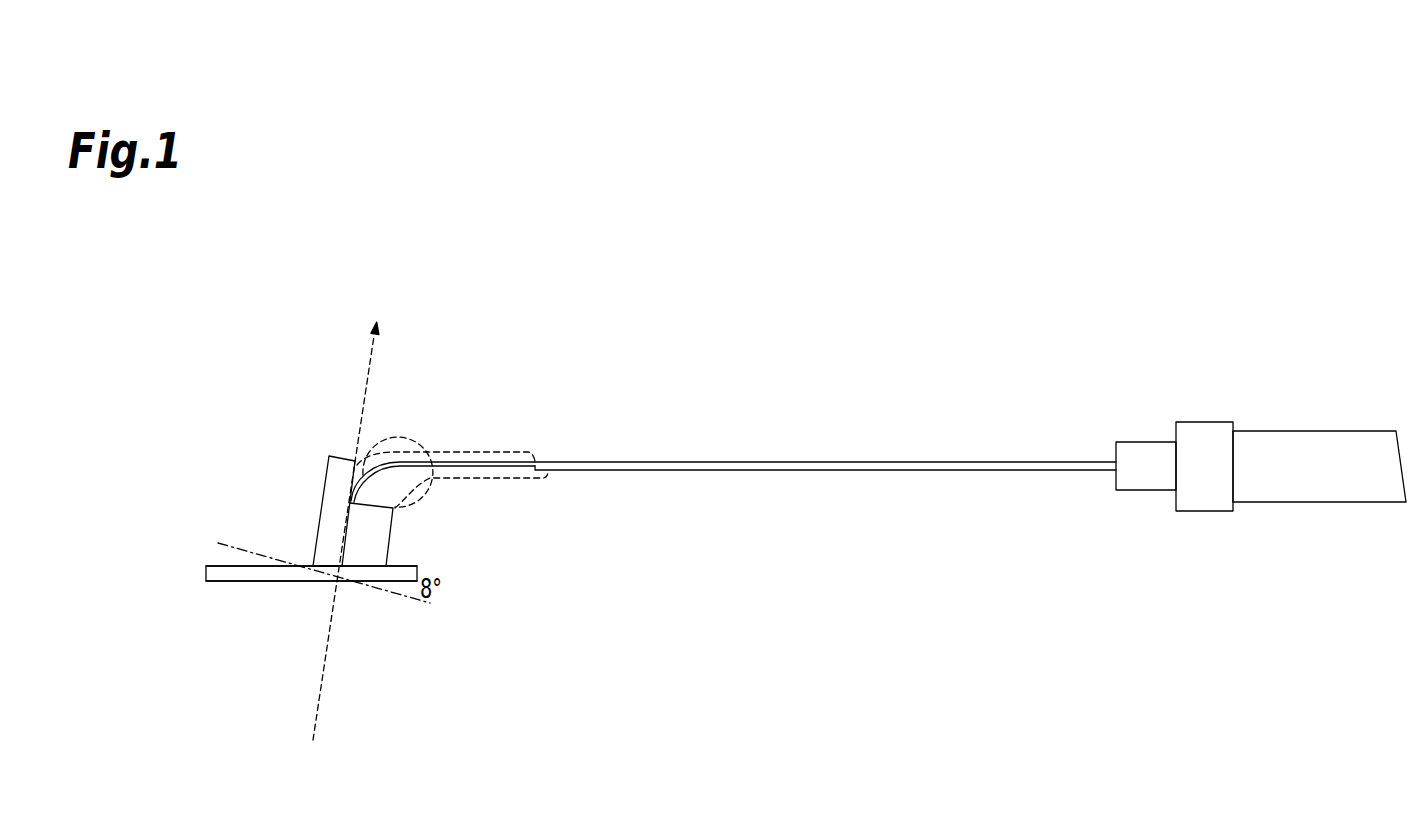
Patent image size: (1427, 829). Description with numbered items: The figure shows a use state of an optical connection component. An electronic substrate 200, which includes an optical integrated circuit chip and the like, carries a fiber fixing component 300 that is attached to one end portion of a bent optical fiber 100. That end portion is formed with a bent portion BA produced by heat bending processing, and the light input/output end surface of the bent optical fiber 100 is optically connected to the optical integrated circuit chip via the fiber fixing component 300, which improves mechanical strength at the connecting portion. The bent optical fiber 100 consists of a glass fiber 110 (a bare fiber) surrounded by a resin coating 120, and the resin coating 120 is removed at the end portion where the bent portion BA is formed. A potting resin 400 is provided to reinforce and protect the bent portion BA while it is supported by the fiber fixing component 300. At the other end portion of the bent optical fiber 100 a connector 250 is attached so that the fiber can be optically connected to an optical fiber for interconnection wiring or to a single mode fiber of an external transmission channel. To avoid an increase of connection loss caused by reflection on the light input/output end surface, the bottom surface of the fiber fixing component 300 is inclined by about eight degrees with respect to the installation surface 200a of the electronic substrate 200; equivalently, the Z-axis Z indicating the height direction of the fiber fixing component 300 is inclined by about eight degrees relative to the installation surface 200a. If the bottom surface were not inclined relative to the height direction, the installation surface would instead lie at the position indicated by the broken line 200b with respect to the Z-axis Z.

The bent optical fiber 100 is at (733, 443).
The glass fiber 110 is at (490, 468).
The resin coating 120 is at (533, 458).
The electronic substrate 200 is at (253, 582).
The installation surface 200a is at (216, 565).
The broken line 200b is at (402, 581).
The connector 250 is at (1304, 431).
The fiber fixing component 300 is at (425, 541).
The potting resin 400 is at (467, 452).
The bent portion BA is at (397, 436).
The Z-axis Z is at (368, 348).